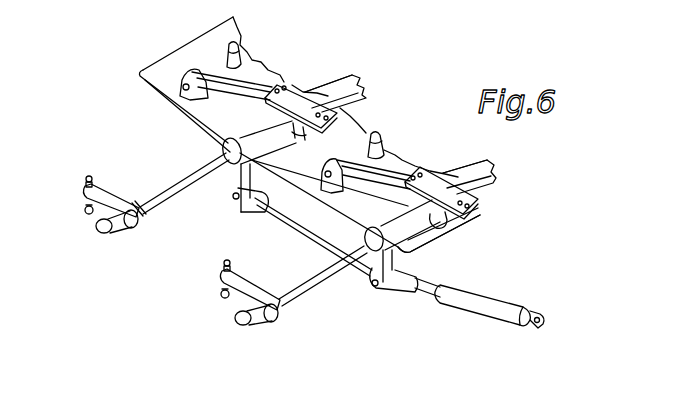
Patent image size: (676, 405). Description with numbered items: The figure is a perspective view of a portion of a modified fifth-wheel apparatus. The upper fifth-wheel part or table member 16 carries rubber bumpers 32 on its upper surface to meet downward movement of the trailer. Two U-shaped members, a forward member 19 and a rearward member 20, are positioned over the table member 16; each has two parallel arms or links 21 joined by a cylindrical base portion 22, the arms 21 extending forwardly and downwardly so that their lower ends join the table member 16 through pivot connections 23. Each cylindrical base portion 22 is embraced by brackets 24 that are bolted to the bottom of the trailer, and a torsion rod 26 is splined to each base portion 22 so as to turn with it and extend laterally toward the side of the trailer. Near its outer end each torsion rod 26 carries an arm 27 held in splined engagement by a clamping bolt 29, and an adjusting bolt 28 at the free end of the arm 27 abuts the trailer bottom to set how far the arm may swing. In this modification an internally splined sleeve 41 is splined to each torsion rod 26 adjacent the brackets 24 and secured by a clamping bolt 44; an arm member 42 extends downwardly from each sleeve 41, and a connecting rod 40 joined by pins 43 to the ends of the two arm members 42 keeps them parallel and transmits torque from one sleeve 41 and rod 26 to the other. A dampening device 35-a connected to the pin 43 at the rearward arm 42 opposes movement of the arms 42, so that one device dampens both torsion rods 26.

The upper fifth-wheel part or table member 16 is at (167, 112).
The forward U-shaped member 19 is at (338, 105).
The rearward U-shaped member 20 is at (475, 162).
The arm or link 21 is at (240, 95).
The cylindrical base portion 22 is at (358, 103).
The pivot connection 23 is at (180, 87).
The bracket 24 is at (292, 83).
The torsion rod 26 is at (197, 168).
The arm 27 is at (106, 194).
The adjusting bolt 28 is at (84, 187).
The clamping bolt 29 is at (142, 218).
The rubber bumper 32 is at (228, 40).
The dampening device 35-a is at (483, 322).
The connecting rod 40 is at (300, 233).
The internally splined sleeve 41 is at (222, 140).
The arm member 42 is at (238, 178).
The pin 43 is at (233, 202).
The clamping bolt 44 is at (460, 232).